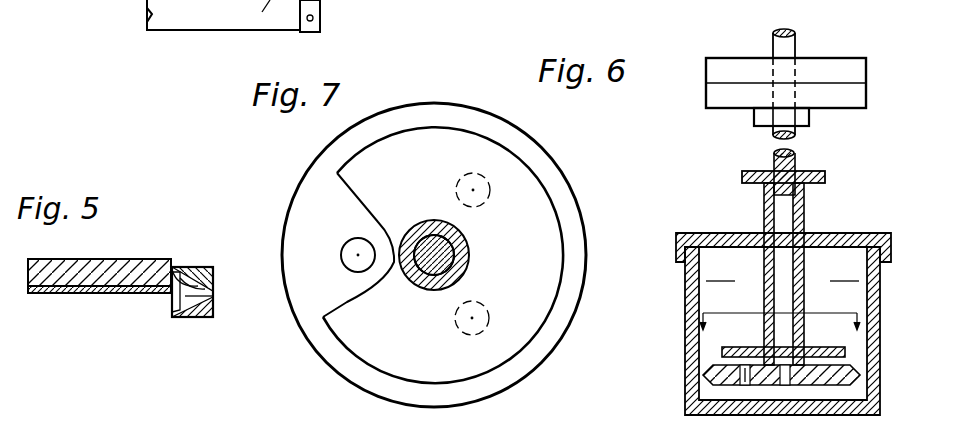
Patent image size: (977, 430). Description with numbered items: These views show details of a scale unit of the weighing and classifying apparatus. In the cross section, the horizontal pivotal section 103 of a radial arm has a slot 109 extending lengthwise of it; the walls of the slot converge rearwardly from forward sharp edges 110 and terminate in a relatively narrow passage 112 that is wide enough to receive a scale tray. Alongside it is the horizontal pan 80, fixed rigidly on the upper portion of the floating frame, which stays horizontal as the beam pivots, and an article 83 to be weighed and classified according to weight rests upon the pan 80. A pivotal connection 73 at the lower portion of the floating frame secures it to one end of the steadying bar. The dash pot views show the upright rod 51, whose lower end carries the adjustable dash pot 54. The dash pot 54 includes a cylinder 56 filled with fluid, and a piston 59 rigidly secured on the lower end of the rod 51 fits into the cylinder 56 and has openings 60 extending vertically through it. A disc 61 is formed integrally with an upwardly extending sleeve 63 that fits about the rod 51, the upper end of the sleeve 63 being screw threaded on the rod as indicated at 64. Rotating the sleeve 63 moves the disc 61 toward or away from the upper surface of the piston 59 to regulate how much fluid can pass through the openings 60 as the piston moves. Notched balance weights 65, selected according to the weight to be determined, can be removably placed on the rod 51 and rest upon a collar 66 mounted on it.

In FIG. 6, the upright rod 51 is at (797, 152).
In FIG. 6, the adjustable dash pot 54 is at (893, 309).
In FIG. 6, the cylinder 56 is at (876, 277).
In FIG. 7, the piston 59 is at (580, 249).
In FIG. 6, the piston 59 is at (845, 378).
In FIG. 7, the openings 60 is at (343, 258).
In FIG. 6, the openings 60 is at (743, 380).
In FIG. 7, the disc 61 is at (540, 317).
In FIG. 6, the disc 61 is at (845, 352).
In FIG. 7, the sleeve 63 is at (470, 258).
In FIG. 6, the sleeve 63 is at (806, 218).
In FIG. 6, the screw thread 64 is at (808, 186).
In FIG. 6, the notched balance weights 65 is at (858, 95).
In FIG. 6, the collar 66 is at (811, 117).
In FIG. 7, the pivotal connection 73 is at (313, 18).
In FIG. 5, the horizontal pan 80 is at (97, 293).
In FIG. 5, the article 83 is at (145, 259).
In FIG. 5, the pivotal section 103 is at (196, 318).
In FIG. 5, the slot 109 is at (200, 298).
In FIG. 5, the sharp edges 110 is at (172, 285).
In FIG. 5, the narrow passage 112 is at (198, 294).